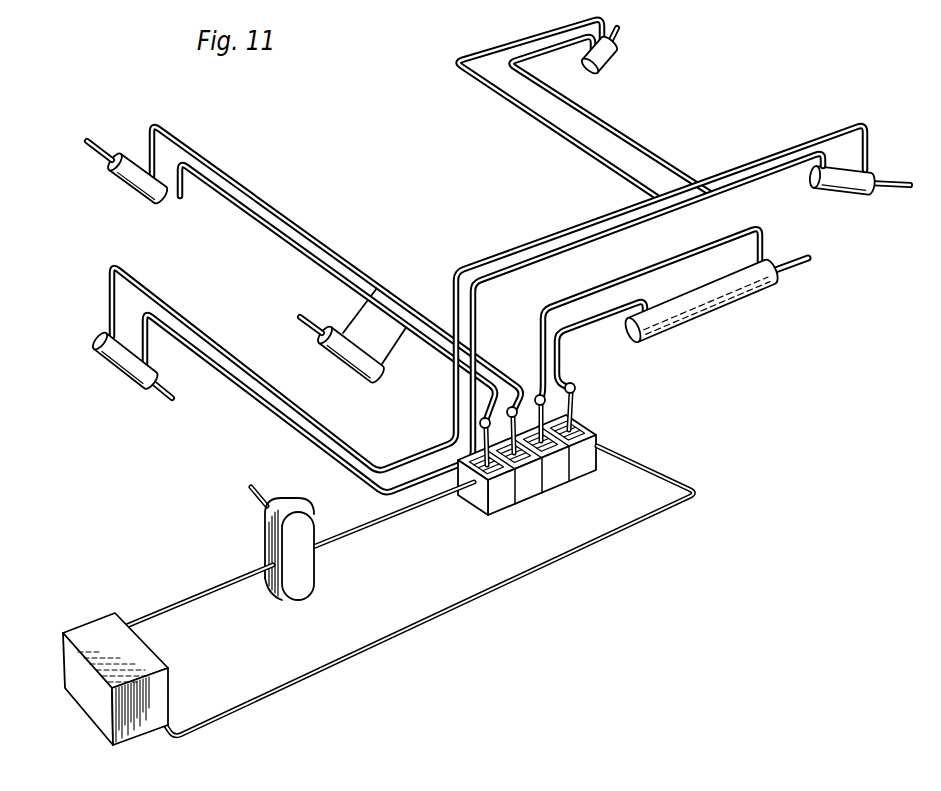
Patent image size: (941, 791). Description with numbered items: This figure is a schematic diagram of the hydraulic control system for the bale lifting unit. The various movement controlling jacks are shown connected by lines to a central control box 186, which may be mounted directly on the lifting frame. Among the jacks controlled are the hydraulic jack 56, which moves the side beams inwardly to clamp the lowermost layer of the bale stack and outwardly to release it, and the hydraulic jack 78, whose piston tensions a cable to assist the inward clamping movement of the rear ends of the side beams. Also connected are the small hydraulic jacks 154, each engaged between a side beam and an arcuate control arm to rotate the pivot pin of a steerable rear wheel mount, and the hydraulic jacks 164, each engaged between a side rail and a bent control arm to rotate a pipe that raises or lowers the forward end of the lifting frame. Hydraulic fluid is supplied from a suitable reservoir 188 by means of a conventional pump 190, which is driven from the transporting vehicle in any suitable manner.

The hydraulic jack 56 is at (113, 356).
The hydraulic jack 78 is at (726, 300).
The hydraulic jack 154 is at (614, 57).
The hydraulic jack 164 is at (128, 176).
The central control box 186 is at (552, 480).
The reservoir 188 is at (162, 683).
The pump 190 is at (308, 560).